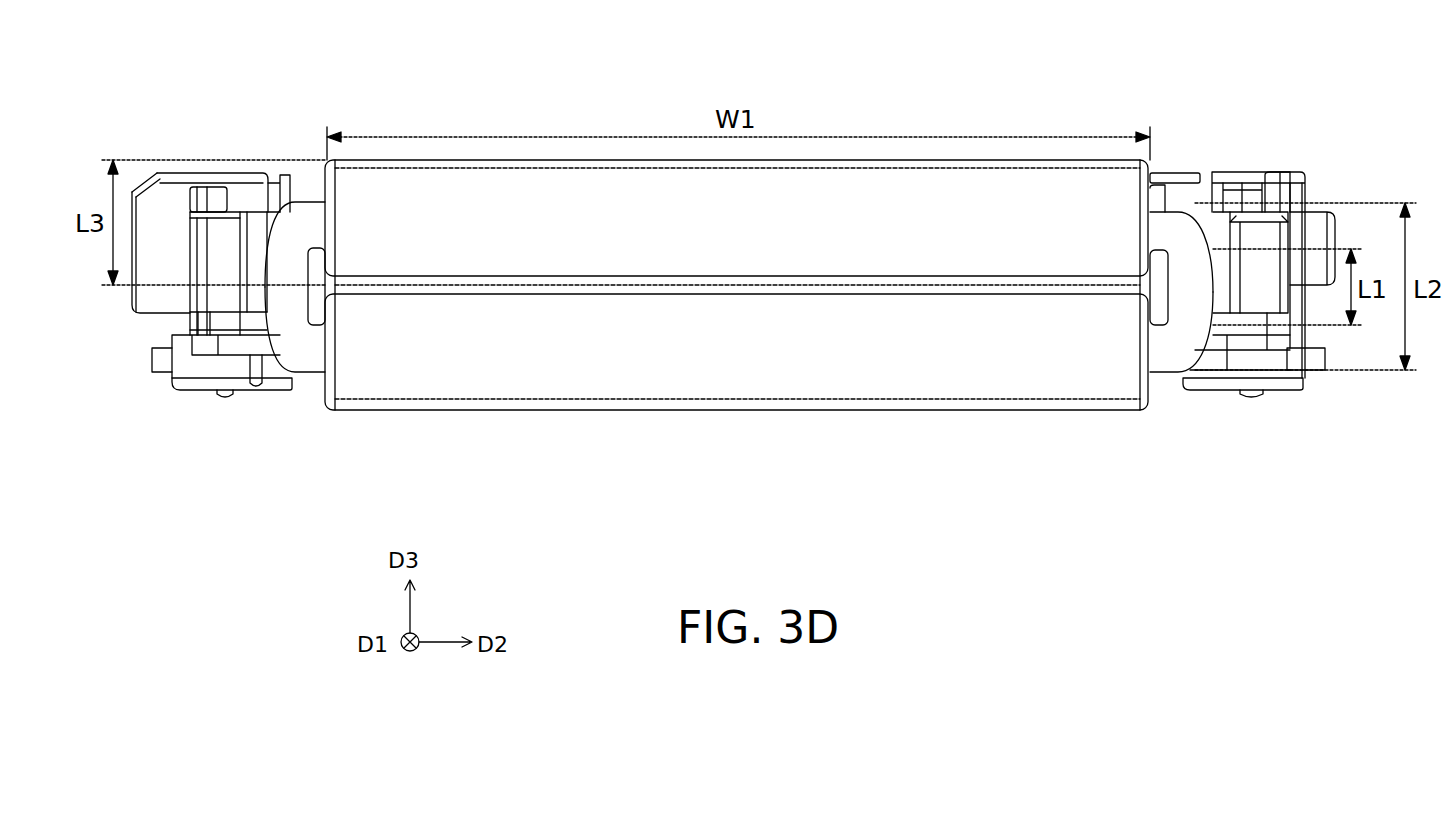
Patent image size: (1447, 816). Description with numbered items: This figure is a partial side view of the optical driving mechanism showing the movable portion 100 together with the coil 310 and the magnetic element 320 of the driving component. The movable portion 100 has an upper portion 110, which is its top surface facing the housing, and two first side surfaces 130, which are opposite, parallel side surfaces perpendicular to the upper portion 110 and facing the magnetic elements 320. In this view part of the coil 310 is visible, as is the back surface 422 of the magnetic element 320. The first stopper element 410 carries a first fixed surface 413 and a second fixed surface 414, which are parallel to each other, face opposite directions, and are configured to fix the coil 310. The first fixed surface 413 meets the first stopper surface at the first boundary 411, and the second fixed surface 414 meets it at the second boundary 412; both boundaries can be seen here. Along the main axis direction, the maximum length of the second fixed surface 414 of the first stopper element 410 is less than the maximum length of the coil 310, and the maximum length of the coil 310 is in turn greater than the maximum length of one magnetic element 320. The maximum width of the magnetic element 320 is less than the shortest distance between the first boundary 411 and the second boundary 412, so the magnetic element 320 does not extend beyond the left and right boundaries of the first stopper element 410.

The movable portion 100 is at (1077, 92).
The upper portion 110 is at (1232, 175).
The first side surfaces 130 is at (260, 228).
The coil 310 is at (1192, 297).
The magnetic element 320 is at (932, 360).
The first stopper element 410 is at (299, 253).
The first boundary 411 is at (303, 303).
The second boundary 412 is at (1188, 317).
The first fixed surface 413 is at (288, 285).
The second fixed surface 414 is at (1179, 274).
The back surface 422 is at (503, 348).